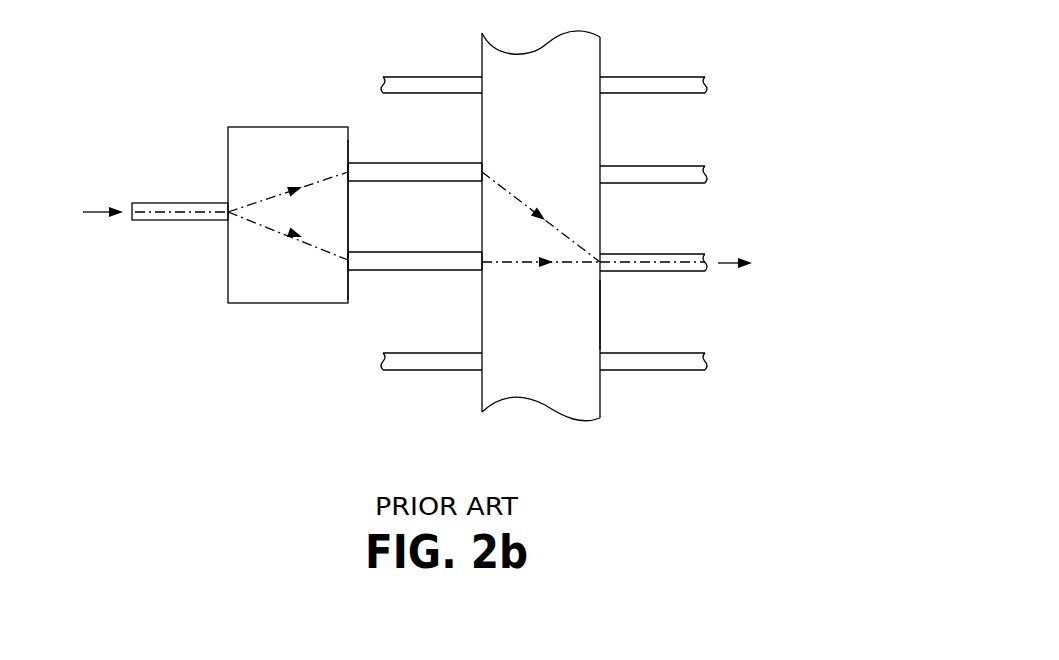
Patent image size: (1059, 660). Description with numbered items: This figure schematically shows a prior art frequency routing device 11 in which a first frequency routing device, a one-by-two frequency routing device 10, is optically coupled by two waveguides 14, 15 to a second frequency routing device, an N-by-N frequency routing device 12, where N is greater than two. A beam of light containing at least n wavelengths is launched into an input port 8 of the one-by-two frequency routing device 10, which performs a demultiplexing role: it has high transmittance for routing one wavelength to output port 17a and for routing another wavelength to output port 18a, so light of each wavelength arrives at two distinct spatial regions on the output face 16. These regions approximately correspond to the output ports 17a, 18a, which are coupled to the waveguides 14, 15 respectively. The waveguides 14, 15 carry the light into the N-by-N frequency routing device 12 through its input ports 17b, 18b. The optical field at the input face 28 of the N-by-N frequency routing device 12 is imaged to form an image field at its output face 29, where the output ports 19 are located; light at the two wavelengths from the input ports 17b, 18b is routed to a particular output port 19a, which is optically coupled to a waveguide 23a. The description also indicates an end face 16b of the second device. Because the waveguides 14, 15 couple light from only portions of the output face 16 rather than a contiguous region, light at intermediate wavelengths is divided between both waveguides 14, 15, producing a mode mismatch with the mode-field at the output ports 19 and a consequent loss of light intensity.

The prior art frequency routing device 11 is at (118, 116).
The input port 8 is at (228, 205).
The 1×2 frequency routing device 10 is at (233, 252).
The output face 16 is at (348, 289).
The waveguide 14 is at (390, 162).
The waveguide 15 is at (398, 251).
The output port 17a is at (350, 161).
The output port 18a is at (350, 250).
The N×N frequency routing device 12 is at (582, 58).
The input port 17b is at (484, 172).
The input port 18b is at (485, 262).
The output ports 19 is at (607, 87).
The output port 19a is at (603, 253).
The waveguide 23a is at (652, 253).
The end face of second block 16b is at (602, 303).
The input face 28 is at (485, 327).
The output face 29 is at (600, 403).